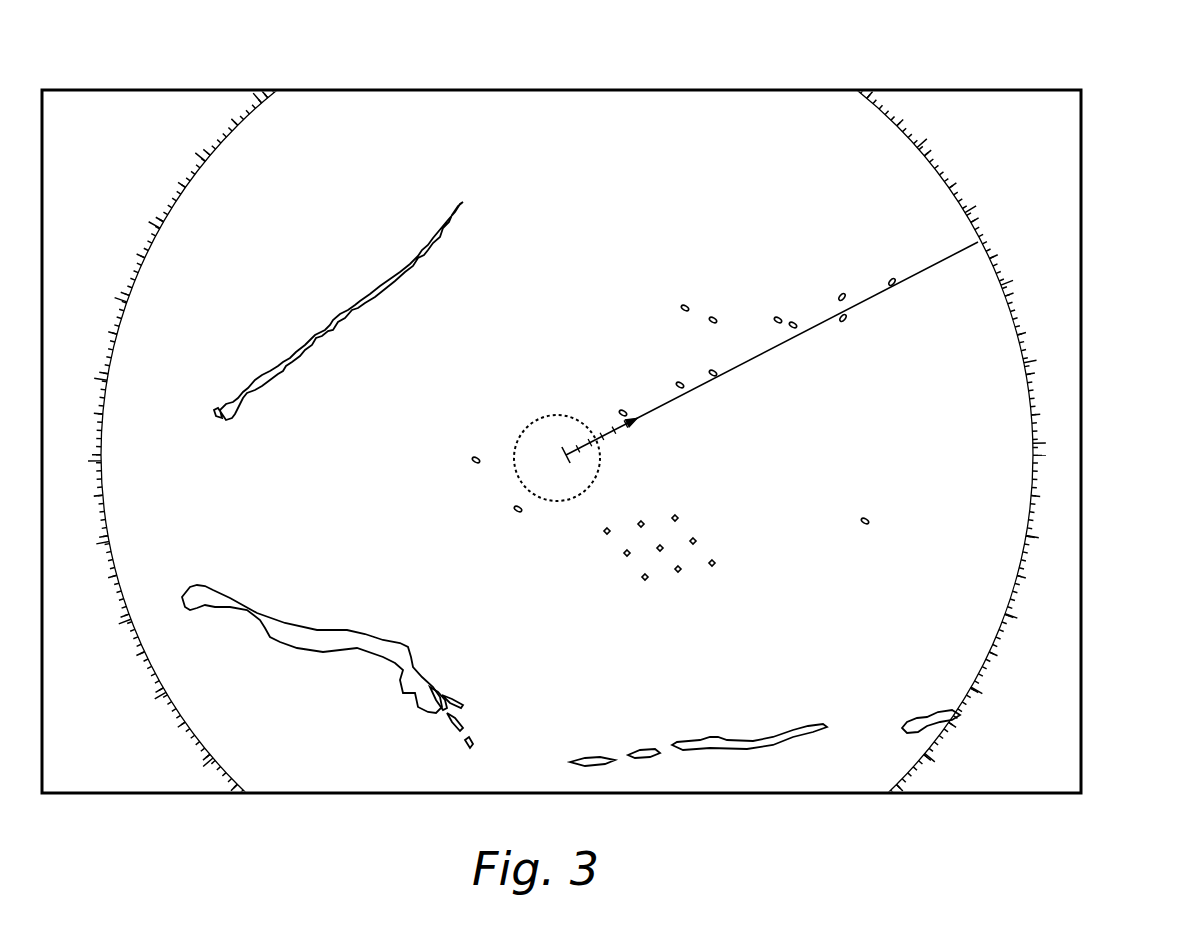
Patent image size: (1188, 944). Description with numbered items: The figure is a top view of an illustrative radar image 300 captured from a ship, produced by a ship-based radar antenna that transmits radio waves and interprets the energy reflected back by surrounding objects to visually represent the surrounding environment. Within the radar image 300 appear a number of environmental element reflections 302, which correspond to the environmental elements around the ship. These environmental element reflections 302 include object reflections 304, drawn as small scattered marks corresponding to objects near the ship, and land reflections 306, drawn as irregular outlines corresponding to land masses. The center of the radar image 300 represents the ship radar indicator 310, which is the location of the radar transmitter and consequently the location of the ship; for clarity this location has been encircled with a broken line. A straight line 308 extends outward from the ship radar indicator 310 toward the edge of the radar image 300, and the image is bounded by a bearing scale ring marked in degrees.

The radar image 300 is at (1060, 48).
The environmental element reflections 302 is at (781, 257).
The object reflections 304 is at (684, 303).
The land reflections 306 is at (285, 369).
The heading line 308 is at (746, 366).
The ship radar indicator 310 is at (543, 459).